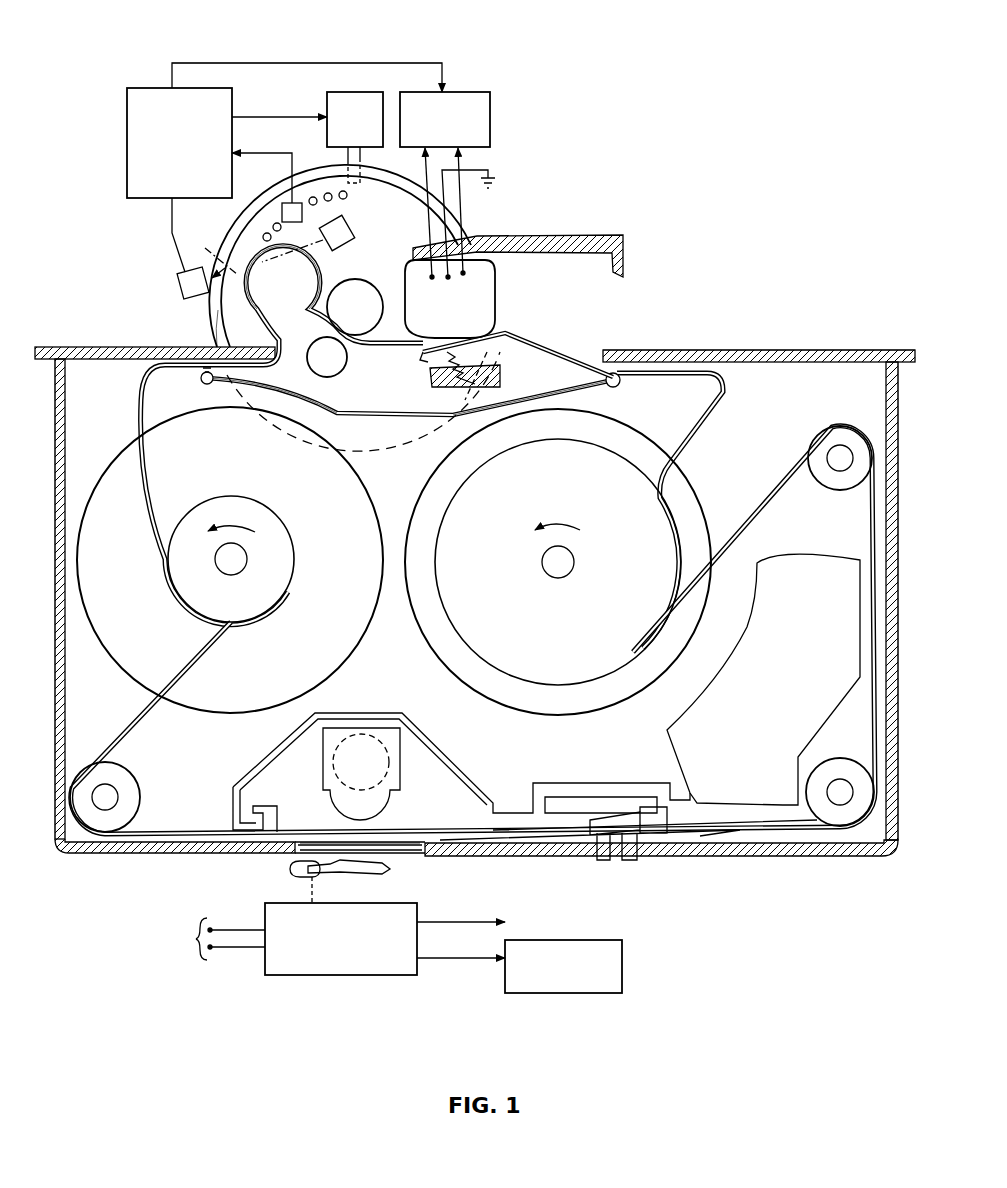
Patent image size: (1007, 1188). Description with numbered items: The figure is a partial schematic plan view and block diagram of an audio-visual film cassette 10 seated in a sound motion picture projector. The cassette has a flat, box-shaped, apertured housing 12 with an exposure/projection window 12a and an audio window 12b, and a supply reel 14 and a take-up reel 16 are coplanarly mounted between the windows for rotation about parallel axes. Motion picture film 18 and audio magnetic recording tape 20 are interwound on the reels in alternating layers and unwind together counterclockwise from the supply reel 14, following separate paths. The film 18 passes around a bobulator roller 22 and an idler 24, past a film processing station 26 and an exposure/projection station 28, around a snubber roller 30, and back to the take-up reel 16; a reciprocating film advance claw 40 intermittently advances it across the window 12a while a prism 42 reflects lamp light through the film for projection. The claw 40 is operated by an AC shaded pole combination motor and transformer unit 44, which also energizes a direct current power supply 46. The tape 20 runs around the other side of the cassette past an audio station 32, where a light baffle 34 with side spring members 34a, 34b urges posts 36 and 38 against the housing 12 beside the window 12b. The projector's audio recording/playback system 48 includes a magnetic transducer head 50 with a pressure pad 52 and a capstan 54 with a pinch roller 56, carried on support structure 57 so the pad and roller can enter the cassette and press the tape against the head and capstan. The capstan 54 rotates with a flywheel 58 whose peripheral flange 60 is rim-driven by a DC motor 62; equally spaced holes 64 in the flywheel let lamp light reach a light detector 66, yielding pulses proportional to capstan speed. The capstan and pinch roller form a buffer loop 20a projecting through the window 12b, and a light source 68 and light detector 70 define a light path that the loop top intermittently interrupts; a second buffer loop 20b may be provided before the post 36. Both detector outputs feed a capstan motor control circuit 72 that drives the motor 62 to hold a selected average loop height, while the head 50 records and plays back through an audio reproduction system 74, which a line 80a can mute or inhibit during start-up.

The cassette 10 is at (746, 328).
The housing 12 is at (893, 482).
The exposure/projection window 12a is at (410, 852).
The audio window 12b is at (603, 348).
The supply reel 14 is at (565, 612).
The take-up reel 16 is at (300, 652).
The motion picture film 18 is at (192, 672).
The audio magnetic recording tape 20 is at (145, 472).
The buffer loop 20a is at (250, 298).
The second buffer loop 20b is at (723, 386).
The bobulator roller 22 is at (838, 480).
The idler 24 is at (818, 777).
The film processing station 26 is at (664, 732).
The exposure/projection station 28 is at (461, 756).
The snubber roller 30 is at (125, 778).
The audio station 32 is at (372, 400).
The light baffle 34 is at (412, 392).
The side spring member 34a is at (540, 388).
The side spring member 34b is at (302, 394).
The post 36 is at (620, 385).
The post 38 is at (201, 382).
The film advance claw 40 is at (350, 873).
The prism 42 is at (358, 735).
The AC shaded pole combination motor and transformer unit 44 is at (358, 975).
The direct current power supply 46 is at (578, 994).
The audio recording/playback system 48 is at (628, 165).
The magnetic transducer head 50 is at (464, 315).
The pressure pad 52 is at (428, 362).
The capstan 54 is at (347, 292).
The pinch roller 56 is at (332, 368).
The support structure 57 is at (556, 242).
The flywheel 58 is at (222, 320).
The peripheral flange 60 is at (237, 236).
The DC motor 62 is at (338, 92).
The holes 64 is at (342, 190).
The light detector 66 is at (282, 210).
The light source 68 is at (352, 226).
The light detector 70 is at (180, 290).
The capstan motor control circuit 72 is at (152, 88).
The audio reproduction system 74 is at (466, 92).
The line 80a is at (405, 63).